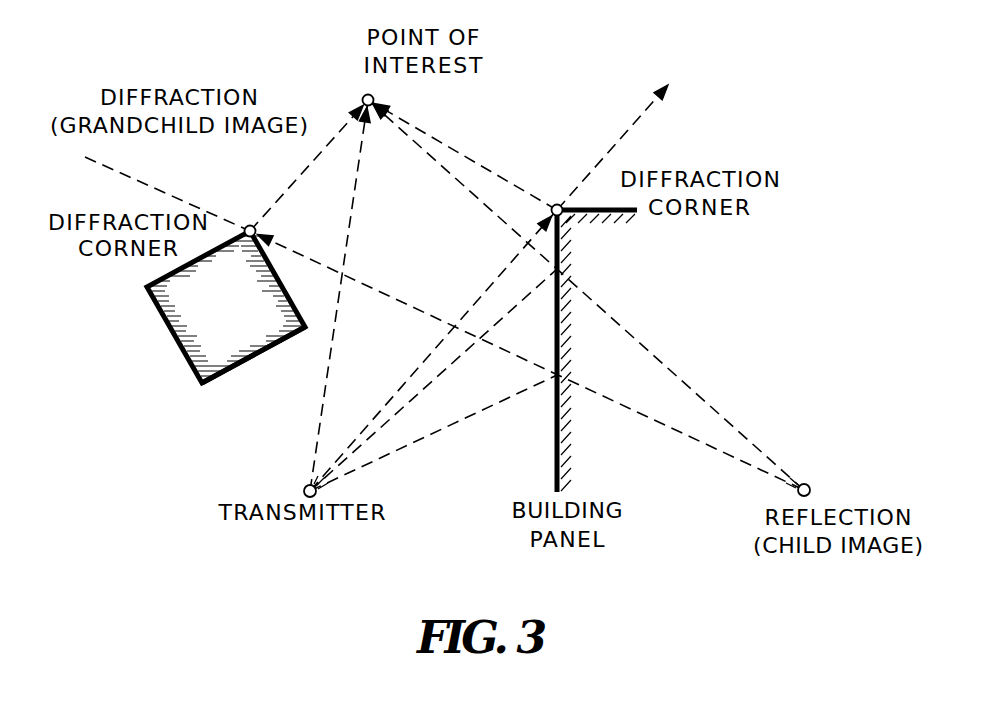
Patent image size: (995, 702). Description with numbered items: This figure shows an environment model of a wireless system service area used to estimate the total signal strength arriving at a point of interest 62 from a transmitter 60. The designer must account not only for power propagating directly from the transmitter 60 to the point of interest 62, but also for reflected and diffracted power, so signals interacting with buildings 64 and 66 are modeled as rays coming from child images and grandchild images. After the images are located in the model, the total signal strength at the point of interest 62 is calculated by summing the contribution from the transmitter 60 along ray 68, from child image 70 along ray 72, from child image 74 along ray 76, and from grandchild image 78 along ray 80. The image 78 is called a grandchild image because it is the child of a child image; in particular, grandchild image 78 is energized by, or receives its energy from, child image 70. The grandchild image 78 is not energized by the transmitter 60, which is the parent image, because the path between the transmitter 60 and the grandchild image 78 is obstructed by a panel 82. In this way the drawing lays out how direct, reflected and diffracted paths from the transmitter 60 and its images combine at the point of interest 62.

The transmitter 60 is at (304, 489).
The point of interest 62 is at (363, 98).
The building 64 is at (556, 428).
The building 66 is at (166, 320).
The ray 68 is at (350, 231).
The child image 70 is at (806, 484).
The ray 72 is at (455, 180).
The child image 74 is at (556, 204).
The ray 76 is at (448, 146).
The grandchild image 78 is at (250, 225).
The ray 80 is at (302, 176).
The panel 82 is at (228, 372).